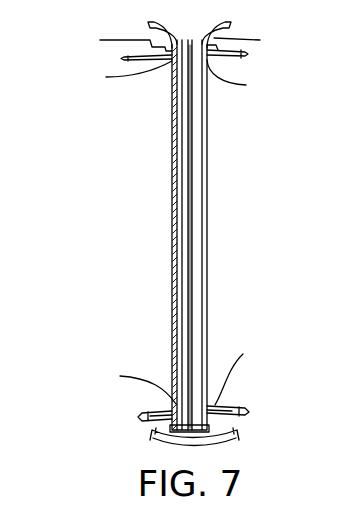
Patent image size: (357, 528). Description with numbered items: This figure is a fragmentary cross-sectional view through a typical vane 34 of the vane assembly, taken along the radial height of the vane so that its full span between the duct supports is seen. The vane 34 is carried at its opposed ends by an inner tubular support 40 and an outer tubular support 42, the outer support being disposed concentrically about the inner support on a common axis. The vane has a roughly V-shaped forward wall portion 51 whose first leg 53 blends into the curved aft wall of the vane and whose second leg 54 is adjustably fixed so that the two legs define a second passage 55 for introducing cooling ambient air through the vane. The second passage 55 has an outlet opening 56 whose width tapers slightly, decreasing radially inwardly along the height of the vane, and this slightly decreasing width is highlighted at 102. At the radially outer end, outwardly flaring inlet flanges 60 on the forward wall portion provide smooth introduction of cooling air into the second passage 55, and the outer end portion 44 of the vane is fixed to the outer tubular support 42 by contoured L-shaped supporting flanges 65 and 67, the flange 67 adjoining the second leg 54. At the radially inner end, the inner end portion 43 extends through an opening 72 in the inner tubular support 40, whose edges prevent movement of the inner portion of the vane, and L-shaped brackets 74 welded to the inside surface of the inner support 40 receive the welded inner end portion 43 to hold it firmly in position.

The radial vane 34 is at (214, 275).
The inner tubular support 40 is at (238, 406).
The outer tubular support 42 is at (246, 85).
The inner end portion 43 is at (126, 385).
The outer end portion 44 is at (130, 78).
The V-shaped forward wall portion 51 is at (170, 233).
The first leg 53 is at (173, 313).
The second leg 54 is at (208, 331).
The second passage 55 is at (180, 112).
The outlet opening 56 is at (208, 150).
The outwardly flaring inlet flange 60 is at (150, 22).
The L-shaped supporting flange 65 is at (118, 46).
The L-shaped supporting flange 67 is at (255, 40).
The opening 72 is at (247, 373).
The L-shaped bracket 74 is at (153, 431).
The highlighted decreasing width of outlet opening 102 is at (168, 212).